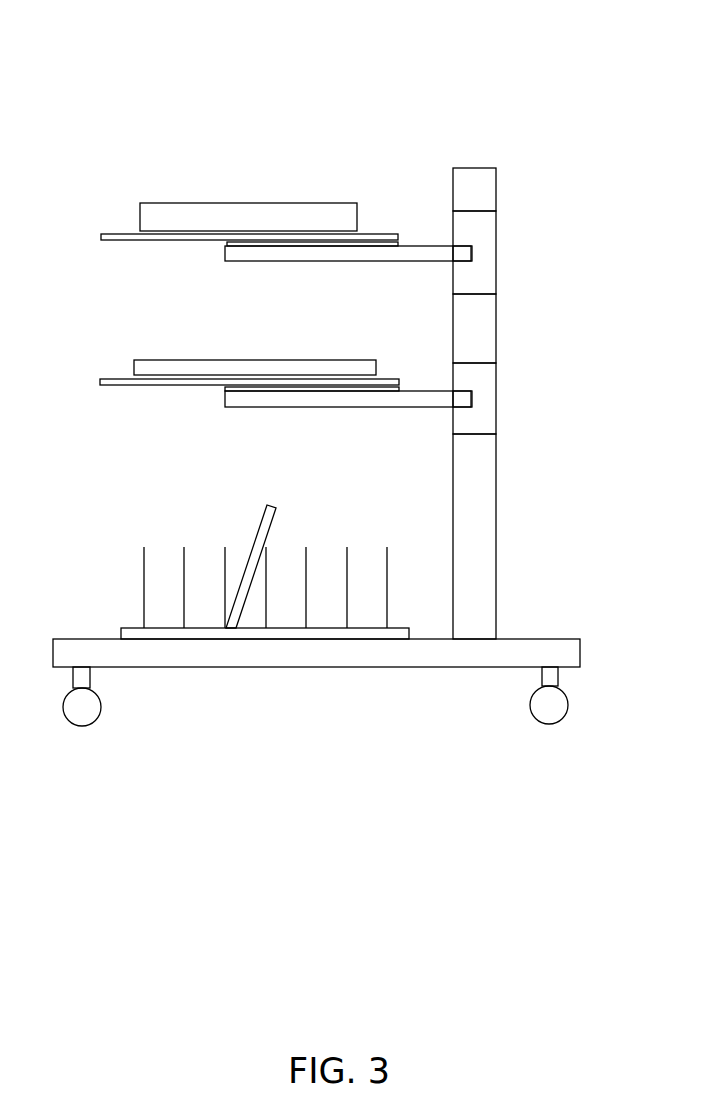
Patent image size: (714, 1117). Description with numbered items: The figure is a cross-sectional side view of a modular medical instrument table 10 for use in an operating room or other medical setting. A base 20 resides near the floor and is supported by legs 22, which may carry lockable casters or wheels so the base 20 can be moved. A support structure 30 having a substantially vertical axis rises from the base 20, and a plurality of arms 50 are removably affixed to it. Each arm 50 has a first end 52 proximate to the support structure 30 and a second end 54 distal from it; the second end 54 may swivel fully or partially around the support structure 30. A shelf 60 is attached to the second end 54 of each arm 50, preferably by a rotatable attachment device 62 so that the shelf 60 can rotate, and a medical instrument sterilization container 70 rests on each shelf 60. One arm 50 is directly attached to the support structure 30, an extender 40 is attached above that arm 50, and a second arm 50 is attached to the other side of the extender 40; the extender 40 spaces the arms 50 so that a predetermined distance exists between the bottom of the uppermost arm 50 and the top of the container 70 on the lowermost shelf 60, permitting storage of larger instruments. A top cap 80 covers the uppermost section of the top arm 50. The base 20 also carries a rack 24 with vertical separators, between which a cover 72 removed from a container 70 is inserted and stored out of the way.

The modular medical instrument table 10 is at (419, 37).
The base 20 is at (294, 653).
The legs 22 is at (88, 679).
The rack 24 is at (143, 612).
The support structure 30 is at (483, 500).
The extender 40 is at (485, 330).
The arm 50 is at (483, 247).
The first end 52 is at (450, 253).
The second end 54 is at (243, 256).
The shelf 60 is at (101, 235).
The rotatable attachment device 62 is at (227, 244).
The medical instrument sterilization container 70 is at (213, 212).
The cover 72 is at (268, 520).
The top cap 80 is at (483, 185).